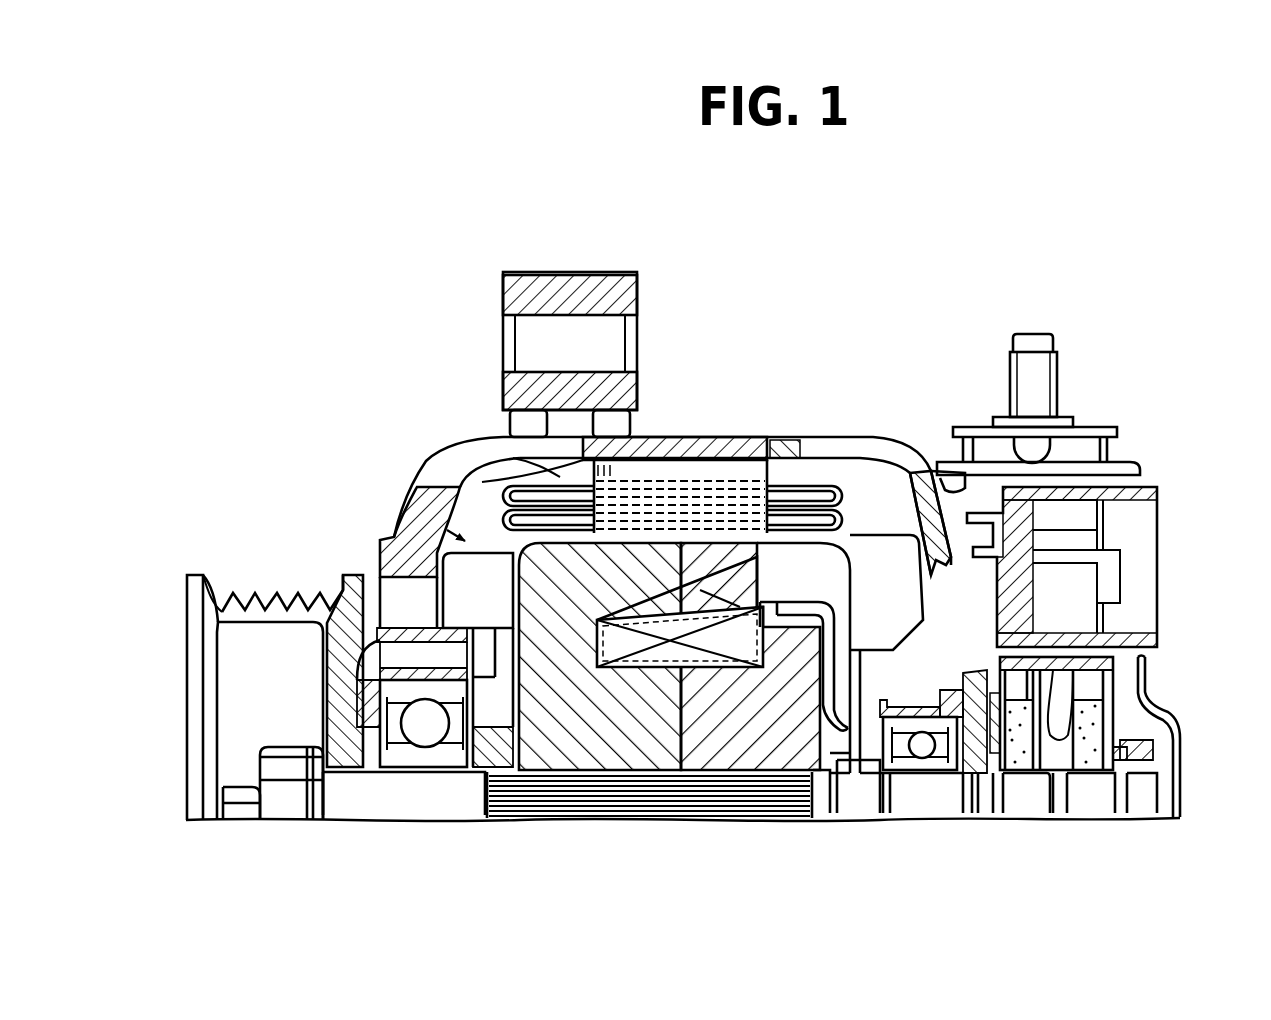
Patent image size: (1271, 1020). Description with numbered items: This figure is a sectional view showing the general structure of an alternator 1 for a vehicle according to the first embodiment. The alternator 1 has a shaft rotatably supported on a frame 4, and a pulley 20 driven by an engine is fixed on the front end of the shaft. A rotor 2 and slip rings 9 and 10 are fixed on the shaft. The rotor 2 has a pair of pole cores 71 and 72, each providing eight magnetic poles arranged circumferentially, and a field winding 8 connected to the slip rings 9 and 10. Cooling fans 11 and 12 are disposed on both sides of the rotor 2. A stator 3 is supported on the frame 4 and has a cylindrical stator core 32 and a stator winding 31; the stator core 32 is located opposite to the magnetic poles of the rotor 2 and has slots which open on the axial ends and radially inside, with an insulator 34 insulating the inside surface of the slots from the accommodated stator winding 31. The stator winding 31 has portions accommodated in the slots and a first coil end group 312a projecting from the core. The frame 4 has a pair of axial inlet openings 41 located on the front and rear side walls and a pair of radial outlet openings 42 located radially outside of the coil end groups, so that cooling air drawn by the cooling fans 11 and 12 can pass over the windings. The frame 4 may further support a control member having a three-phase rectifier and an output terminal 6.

The alternator 1 is at (1010, 226).
The rotor 2 is at (400, 505).
The stator 3 is at (866, 454).
The frame 4 is at (700, 435).
The output terminal 6 is at (1040, 372).
The field winding 8 is at (685, 625).
The slip ring 9 is at (1107, 797).
The slip ring 10 is at (1020, 795).
The cooling fan 11 is at (403, 613).
The cooling fan 12 is at (900, 617).
The pulley 20 is at (240, 625).
The stator winding 31 is at (822, 470).
The stator core 32 is at (653, 480).
The insulator 34 is at (500, 435).
The axial inlet opening 41 is at (460, 600).
The radial outlet opening 42 is at (452, 468).
The pole core 71 is at (743, 700).
The pole core 72 is at (410, 515).
The first coil end group 312a is at (470, 465).